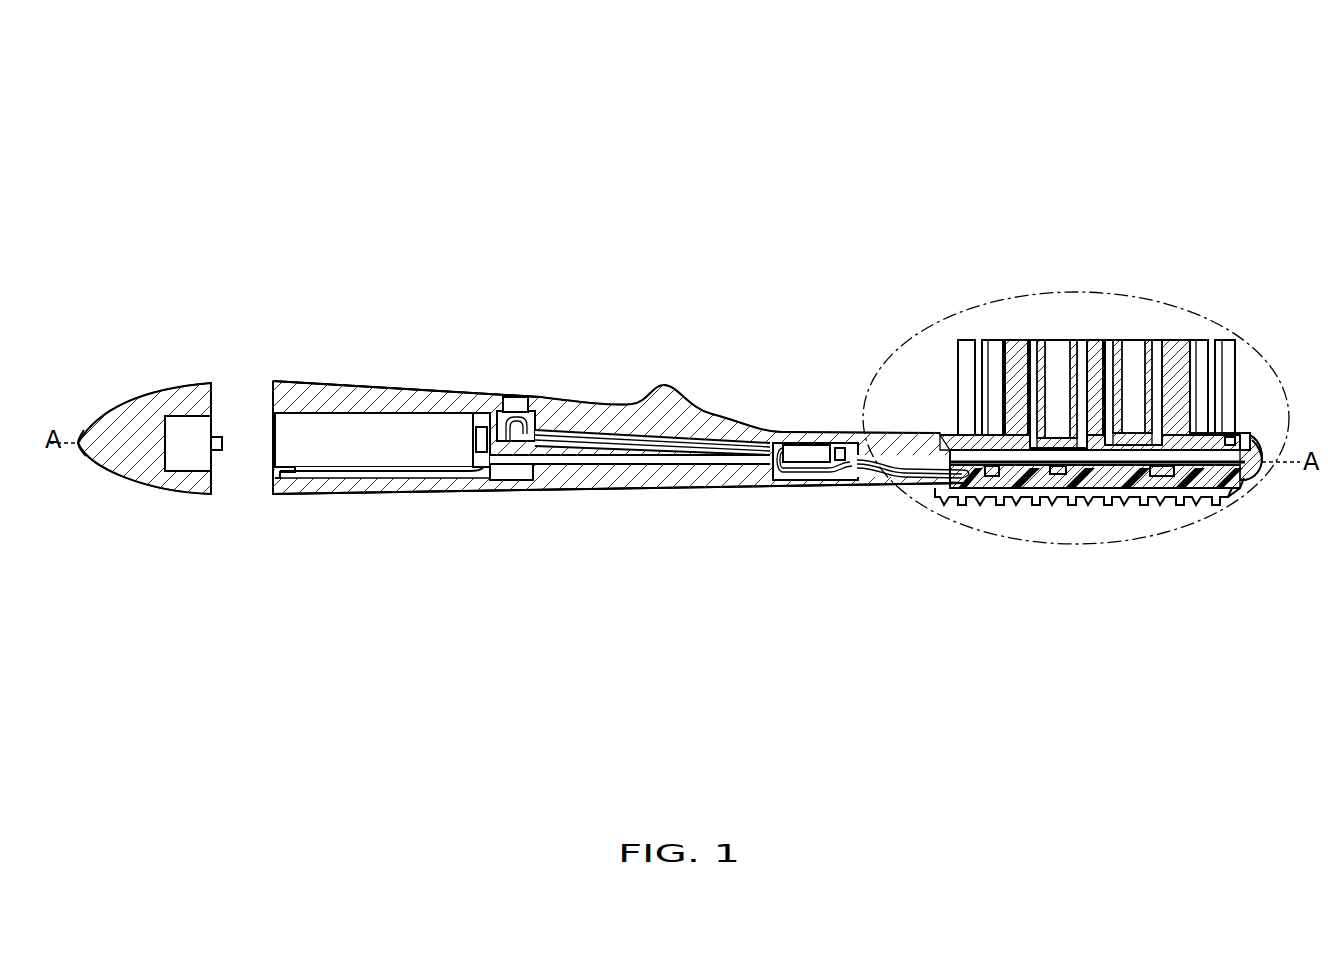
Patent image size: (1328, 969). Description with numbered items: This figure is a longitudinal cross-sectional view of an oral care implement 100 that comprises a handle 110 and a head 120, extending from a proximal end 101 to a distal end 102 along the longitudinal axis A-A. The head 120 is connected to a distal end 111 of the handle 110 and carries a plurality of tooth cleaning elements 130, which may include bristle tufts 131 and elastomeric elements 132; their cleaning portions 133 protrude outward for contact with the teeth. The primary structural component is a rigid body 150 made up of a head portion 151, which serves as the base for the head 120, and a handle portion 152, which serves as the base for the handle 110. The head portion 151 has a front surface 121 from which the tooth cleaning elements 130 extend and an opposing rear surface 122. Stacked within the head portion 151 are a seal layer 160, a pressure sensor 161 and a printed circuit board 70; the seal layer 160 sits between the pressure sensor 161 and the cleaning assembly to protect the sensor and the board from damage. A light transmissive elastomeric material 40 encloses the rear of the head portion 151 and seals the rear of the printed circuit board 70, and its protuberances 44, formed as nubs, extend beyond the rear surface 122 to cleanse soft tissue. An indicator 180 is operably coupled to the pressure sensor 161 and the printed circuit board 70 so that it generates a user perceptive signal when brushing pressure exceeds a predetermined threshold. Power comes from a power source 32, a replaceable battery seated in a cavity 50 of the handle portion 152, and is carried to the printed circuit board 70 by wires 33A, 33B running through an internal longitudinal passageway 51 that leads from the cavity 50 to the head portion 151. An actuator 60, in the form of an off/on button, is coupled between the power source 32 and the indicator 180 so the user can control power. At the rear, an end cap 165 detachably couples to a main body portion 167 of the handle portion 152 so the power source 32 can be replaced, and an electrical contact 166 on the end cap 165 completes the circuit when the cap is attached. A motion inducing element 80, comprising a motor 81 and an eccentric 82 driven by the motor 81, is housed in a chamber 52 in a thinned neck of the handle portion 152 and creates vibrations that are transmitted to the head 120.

The oral care implement 100 is at (198, 132).
The proximal end 101 is at (78, 447).
The distal end 102 is at (1258, 438).
The handle 110 is at (375, 362).
The distal end of the handle 111 is at (897, 485).
The head 120 is at (1250, 500).
The front surface 121 is at (1250, 440).
The rear surface 122 is at (1230, 482).
The tooth cleaning elements 130 is at (1225, 331).
The bristle tufts 131 is at (1213, 340).
The elastomeric elements 132 is at (1097, 340).
The cleaning portion 133 is at (1100, 340).
The body 150 is at (578, 510).
The head portion 151 is at (1262, 440).
The handle portion 152 is at (437, 395).
The seal layer 160 is at (1162, 480).
The pressure sensor 161 is at (1078, 492).
The end cap 165 is at (135, 410).
The electrical contact 166 is at (224, 444).
The main body portion 167 is at (305, 485).
The indicator 180 is at (988, 478).
The power source 32 is at (340, 445).
The wire 33A is at (655, 470).
The wire 33B is at (622, 440).
The light transmissive elastomeric material 40 is at (1008, 512).
The protuberances 44 is at (1093, 500).
The cavity 50 is at (487, 395).
The internal longitudinal passageway 51 is at (745, 465).
The chamber 52 is at (840, 492).
The actuator 60 is at (518, 398).
The printed circuit board 70 is at (1190, 500).
The motion inducing element 80 is at (805, 450).
The motor 81 is at (805, 475).
The eccentric 82 is at (843, 455).